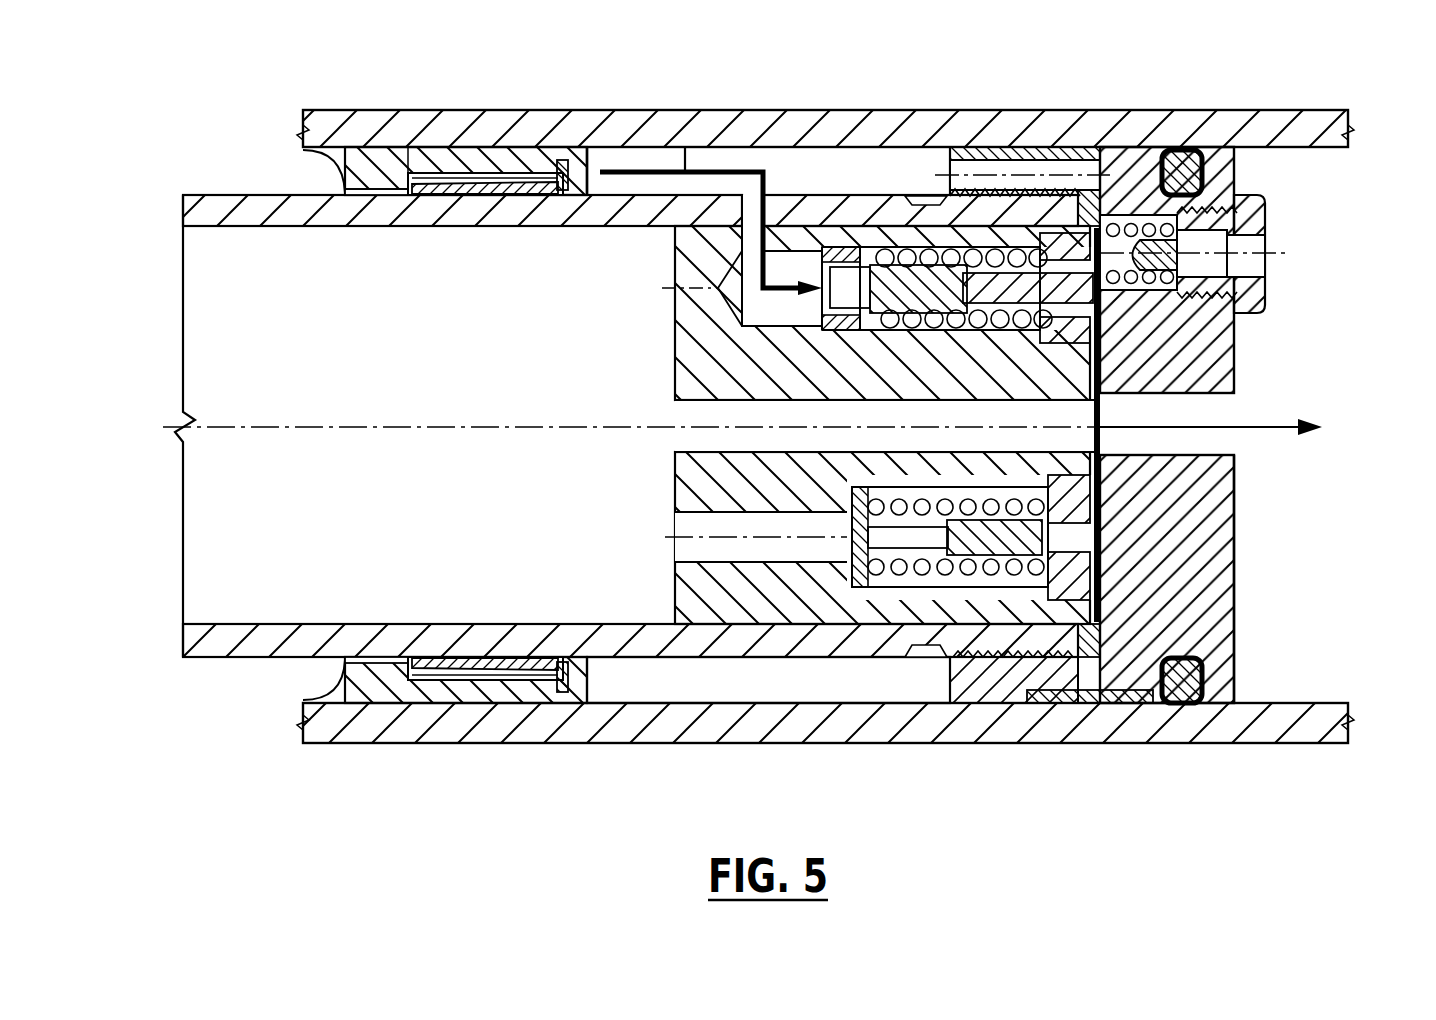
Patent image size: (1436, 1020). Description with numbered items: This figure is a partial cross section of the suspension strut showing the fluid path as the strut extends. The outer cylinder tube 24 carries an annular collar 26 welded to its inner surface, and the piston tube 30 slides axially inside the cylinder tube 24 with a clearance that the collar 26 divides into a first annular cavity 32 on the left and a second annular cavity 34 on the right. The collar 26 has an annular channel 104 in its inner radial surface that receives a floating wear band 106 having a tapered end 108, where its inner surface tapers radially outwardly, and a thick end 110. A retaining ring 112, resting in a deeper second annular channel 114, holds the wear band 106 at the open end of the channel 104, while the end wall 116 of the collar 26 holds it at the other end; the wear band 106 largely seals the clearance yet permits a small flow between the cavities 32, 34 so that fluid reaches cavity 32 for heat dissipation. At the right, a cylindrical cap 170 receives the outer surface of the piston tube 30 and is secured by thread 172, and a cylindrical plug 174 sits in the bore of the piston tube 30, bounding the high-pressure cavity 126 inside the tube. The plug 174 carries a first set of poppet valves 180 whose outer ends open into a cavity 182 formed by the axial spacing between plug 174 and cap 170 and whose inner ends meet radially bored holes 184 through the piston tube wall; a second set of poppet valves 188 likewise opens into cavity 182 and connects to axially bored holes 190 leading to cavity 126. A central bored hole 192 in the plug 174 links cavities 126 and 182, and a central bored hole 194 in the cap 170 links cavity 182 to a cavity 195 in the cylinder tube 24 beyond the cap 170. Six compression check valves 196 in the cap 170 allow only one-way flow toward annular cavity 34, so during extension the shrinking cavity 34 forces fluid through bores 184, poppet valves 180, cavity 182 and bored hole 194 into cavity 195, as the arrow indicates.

The cylinder tube 24 is at (505, 125).
The annular collar 26 is at (447, 147).
The piston tube 30 is at (304, 227).
The first annular cavity 32 is at (205, 181).
The second annular cavity 34 is at (840, 191).
The annular channel 104 is at (418, 147).
The floating wear band 106 is at (462, 197).
The tapered end 108 is at (522, 197).
The thick end 110 is at (412, 197).
The retaining ring 112 is at (578, 197).
The second annular channel 114 is at (560, 150).
The end wall 116 is at (692, 170).
The cavity 126 is at (410, 478).
The cylindrical cap 170 is at (1237, 617).
The thread 172 is at (1000, 660).
The cylindrical plug 174 is at (675, 490).
The poppet valves 180 is at (953, 247).
The cavity 182 is at (1098, 602).
The radially bored holes 184 is at (773, 212).
The poppet valves 188 is at (935, 580).
The axially bored holes 190 is at (675, 548).
The bored hole 192 is at (629, 440).
The bored hole 194 is at (1217, 408).
The cavity 195 is at (1308, 552).
The compression check valves 196 is at (1165, 290).